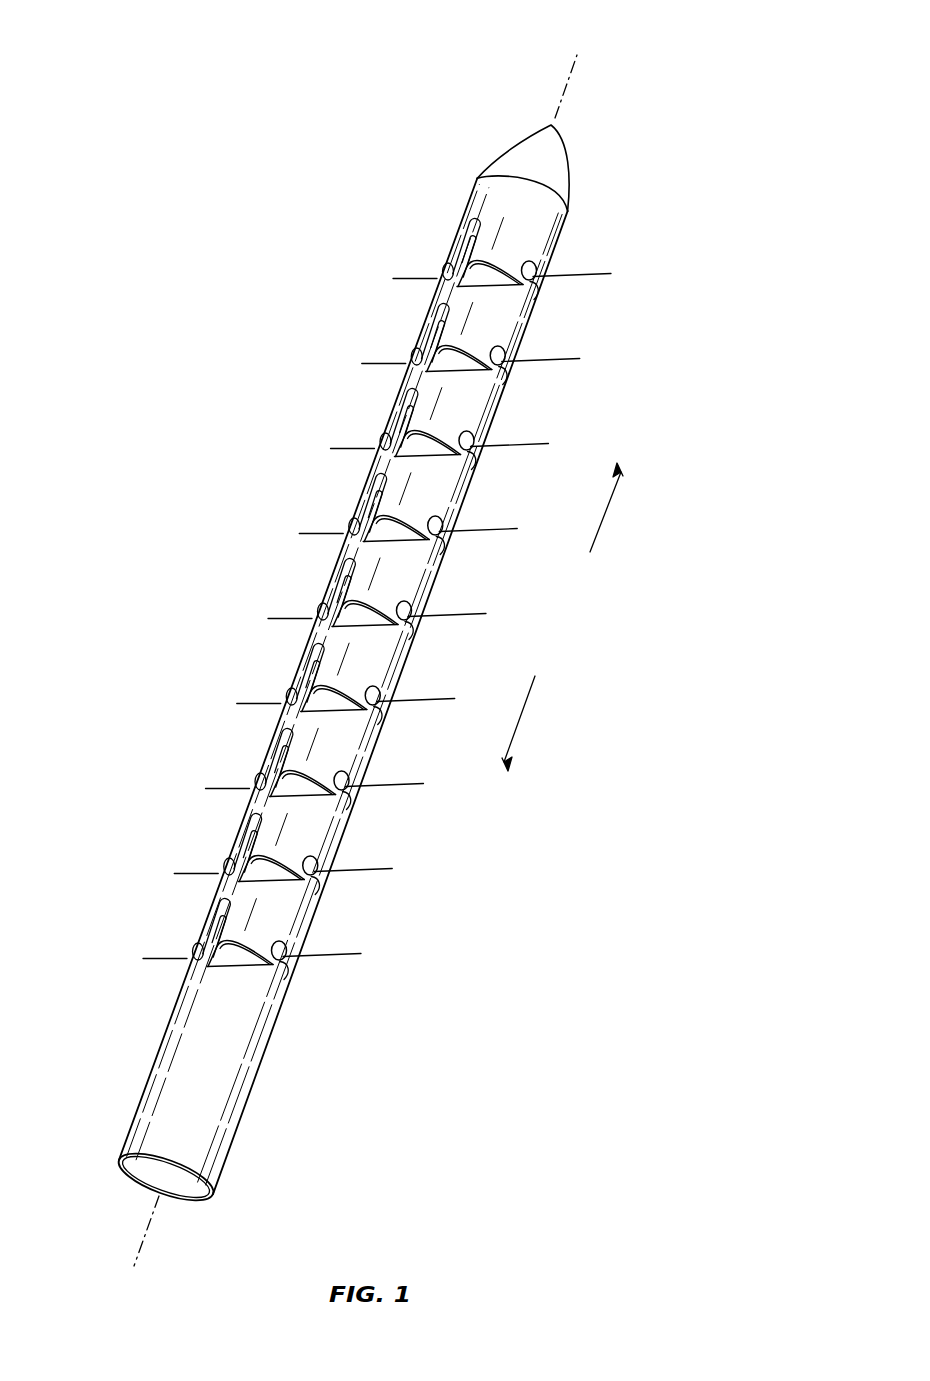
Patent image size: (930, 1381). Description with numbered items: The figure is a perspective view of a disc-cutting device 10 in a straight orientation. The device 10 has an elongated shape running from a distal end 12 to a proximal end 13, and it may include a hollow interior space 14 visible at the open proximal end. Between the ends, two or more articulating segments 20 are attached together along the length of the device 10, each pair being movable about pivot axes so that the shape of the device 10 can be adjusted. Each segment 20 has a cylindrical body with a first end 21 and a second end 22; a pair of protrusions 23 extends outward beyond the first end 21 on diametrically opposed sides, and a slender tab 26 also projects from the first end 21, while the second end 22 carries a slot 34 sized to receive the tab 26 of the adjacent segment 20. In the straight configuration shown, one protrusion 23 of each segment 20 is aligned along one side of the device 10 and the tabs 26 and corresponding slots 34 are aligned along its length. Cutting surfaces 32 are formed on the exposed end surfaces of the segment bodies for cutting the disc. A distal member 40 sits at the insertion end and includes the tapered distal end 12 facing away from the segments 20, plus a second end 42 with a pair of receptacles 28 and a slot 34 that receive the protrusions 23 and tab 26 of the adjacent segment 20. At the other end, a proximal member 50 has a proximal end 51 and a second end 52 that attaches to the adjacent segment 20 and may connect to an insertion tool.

The device 10 is at (163, 349).
The distal end 12 is at (554, 124).
The proximal end 13 is at (204, 1201).
The hollow interior space 14 is at (142, 1172).
The articulating segment 20 is at (443, 487).
The first end 21 is at (445, 545).
The second end 22 is at (504, 380).
The protrusion 23 is at (503, 357).
The tab 26 is at (466, 248).
The receptacle 28 is at (505, 346).
The cutting surface 32 is at (492, 283).
The slot 34 is at (474, 222).
The distal member 40 is at (496, 203).
The second end 42 is at (446, 270).
The proximal member 50 is at (235, 1073).
The proximal end 51 is at (121, 1166).
The second end 52 is at (192, 966).